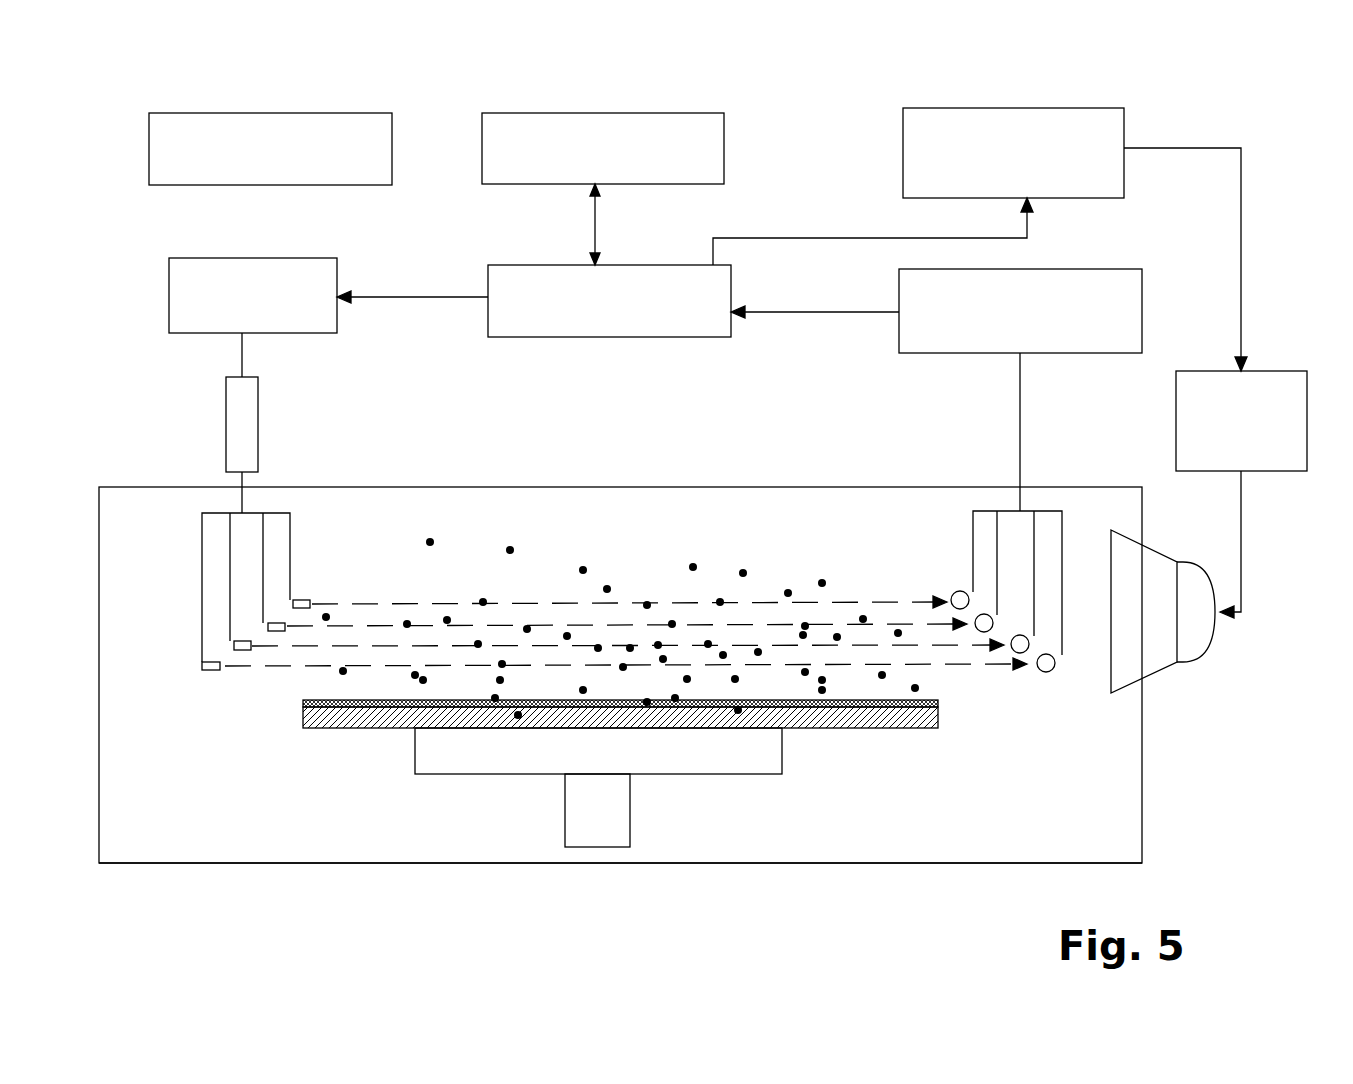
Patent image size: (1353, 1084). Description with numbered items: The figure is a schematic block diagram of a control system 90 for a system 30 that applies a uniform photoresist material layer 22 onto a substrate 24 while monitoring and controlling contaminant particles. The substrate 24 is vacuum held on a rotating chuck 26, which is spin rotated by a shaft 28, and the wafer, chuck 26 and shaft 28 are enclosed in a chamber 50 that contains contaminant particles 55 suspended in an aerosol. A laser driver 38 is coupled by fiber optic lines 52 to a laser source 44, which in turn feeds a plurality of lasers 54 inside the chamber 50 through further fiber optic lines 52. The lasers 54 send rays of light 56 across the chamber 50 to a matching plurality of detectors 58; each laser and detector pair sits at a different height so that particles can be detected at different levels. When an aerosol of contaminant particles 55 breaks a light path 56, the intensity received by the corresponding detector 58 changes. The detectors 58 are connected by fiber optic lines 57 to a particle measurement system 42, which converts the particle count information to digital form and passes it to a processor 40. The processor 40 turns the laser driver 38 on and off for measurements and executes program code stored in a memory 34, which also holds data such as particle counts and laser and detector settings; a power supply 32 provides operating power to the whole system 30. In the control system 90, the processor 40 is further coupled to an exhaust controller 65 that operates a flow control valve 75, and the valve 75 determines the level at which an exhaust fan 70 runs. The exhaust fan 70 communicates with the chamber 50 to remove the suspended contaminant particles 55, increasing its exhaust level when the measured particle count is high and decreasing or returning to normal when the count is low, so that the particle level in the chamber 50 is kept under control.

The photoresist material layer 22 is at (303, 702).
The substrate 24 is at (303, 723).
The rotating chuck 26 is at (1028, 770).
The shaft 28 is at (585, 813).
The system 30 is at (958, 720).
The power supply 32 is at (195, 113).
The memory 34 is at (635, 113).
The laser driver 38 is at (310, 258).
The processor 40 is at (635, 337).
The particle measurement system 42 is at (1040, 269).
The laser source 44 is at (230, 412).
The chamber 50 is at (612, 487).
The fiber optic lines 52 is at (242, 352).
The lasers 54 is at (215, 672).
The contaminant particles 55 is at (583, 565).
The rays of light 56 is at (392, 603).
The fiber optic lines 57 is at (1020, 415).
The detectors 58 is at (1046, 673).
The exhaust controller 65 is at (1043, 108).
The exhaust fan 70 is at (1135, 555).
The flow control valve 75 is at (1257, 380).
The control system 90 is at (450, 92).